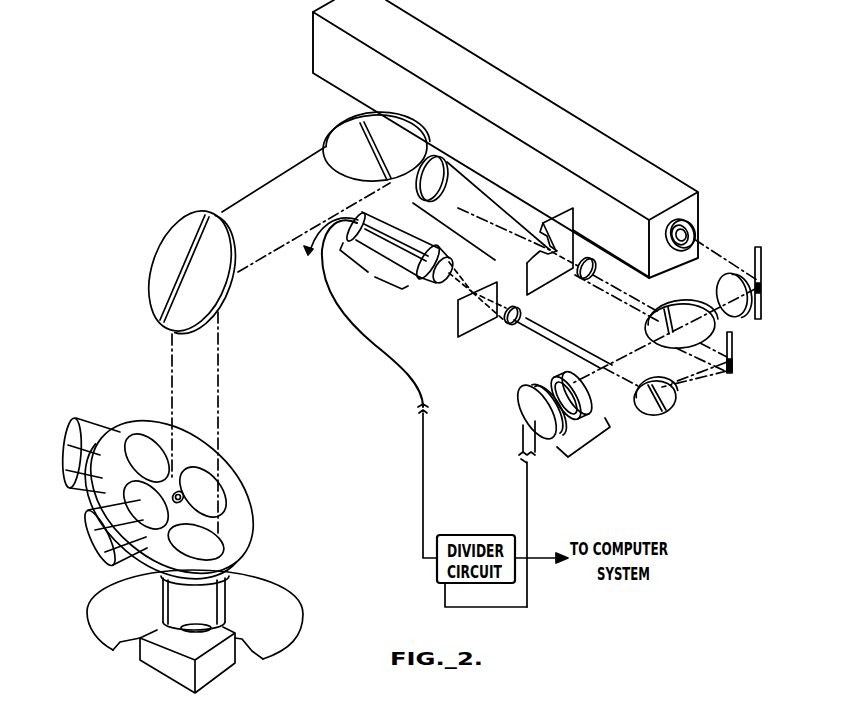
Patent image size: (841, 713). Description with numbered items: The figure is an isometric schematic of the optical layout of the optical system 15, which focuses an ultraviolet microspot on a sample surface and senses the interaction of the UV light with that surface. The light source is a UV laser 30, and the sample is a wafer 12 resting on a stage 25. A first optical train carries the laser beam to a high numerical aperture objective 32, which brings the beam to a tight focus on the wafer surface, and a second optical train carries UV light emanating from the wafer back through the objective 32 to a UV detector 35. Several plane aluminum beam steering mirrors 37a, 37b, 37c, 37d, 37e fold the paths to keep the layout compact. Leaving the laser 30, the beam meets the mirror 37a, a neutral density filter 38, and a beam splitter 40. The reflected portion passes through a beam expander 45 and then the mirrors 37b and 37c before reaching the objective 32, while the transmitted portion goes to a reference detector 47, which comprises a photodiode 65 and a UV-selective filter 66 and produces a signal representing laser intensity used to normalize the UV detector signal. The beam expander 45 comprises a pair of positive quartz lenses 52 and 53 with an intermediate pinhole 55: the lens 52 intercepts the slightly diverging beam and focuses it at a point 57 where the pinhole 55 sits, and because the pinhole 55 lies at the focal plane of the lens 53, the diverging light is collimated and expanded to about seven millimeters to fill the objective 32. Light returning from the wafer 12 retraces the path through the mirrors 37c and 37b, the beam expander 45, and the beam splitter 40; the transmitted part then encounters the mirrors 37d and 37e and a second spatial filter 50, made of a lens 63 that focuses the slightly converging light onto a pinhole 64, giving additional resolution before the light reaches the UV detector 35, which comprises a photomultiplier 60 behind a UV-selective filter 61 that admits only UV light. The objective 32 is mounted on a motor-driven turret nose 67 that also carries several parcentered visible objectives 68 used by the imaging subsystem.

The optical system 15 is at (90, 50).
The UV laser 30 is at (590, 150).
The beam steering mirror 37a is at (762, 262).
The beam steering mirror 37b is at (340, 122).
The beam steering mirror 37c is at (173, 250).
The beam steering mirror 37d is at (733, 362).
The beam steering mirror 37e is at (665, 412).
The positive quartz lens 53 is at (436, 188).
The beam expander 45 is at (499, 258).
The UV detector 35 is at (371, 272).
The photomultiplier 60 is at (383, 225).
The UV-selective filter 61 is at (452, 253).
The second spatial filter 50 is at (425, 315).
The pinhole 64 is at (467, 320).
The lens 63 is at (518, 318).
The focal point 57 is at (577, 230).
The pinhole 55 is at (556, 228).
The positive quartz lens 52 is at (593, 266).
The neutral density filter 38 is at (718, 290).
The beam splitter 40 is at (716, 327).
The photodiode 65 is at (560, 422).
The UV-selective filter 66 is at (585, 402).
The reference detector 47 is at (590, 447).
The turret nose 67 is at (135, 430).
The visible objectives 68 is at (88, 492).
The high numerical aperture objective 32 is at (228, 578).
The wafer 12 is at (280, 600).
The stage 25 is at (237, 662).